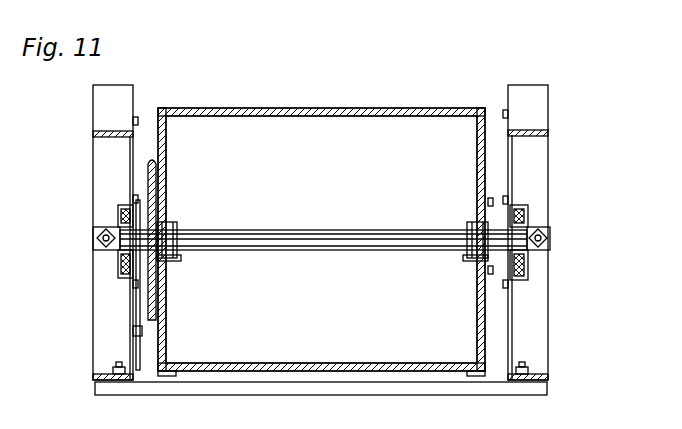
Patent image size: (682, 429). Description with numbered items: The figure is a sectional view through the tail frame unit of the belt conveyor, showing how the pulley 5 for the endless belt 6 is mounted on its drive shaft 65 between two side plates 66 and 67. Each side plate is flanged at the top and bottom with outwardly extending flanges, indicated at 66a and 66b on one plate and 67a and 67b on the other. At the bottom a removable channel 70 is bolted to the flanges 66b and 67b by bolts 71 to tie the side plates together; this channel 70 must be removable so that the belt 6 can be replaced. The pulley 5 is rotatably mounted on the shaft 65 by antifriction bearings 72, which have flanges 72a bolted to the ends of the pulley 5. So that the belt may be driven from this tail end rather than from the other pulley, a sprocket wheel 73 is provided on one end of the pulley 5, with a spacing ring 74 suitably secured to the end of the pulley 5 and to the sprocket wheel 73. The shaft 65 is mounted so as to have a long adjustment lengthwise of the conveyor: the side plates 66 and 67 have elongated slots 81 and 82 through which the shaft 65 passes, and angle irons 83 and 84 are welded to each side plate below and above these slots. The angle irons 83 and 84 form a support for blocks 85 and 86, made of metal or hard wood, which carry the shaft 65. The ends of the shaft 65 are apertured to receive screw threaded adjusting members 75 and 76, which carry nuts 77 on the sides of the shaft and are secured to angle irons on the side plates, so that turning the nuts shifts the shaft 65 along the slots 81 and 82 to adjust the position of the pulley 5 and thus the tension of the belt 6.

The pulley 5 is at (288, 118).
The endless belt 6 is at (330, 108).
The drive shaft 65 is at (350, 250).
The side plate 66 is at (512, 174).
The top flange 66a is at (528, 136).
The bottom flange 66b is at (548, 378).
The side plate 67 is at (130, 186).
The top flange 67a is at (93, 134).
The bottom flange 67b is at (108, 375).
The removable channel 70 is at (297, 390).
The bolt 71 is at (118, 366).
The antifriction bearing 72 is at (168, 222).
The bearing flange 72a is at (166, 259).
The sprocket wheel 73 is at (151, 160).
The spacing ring 74 is at (140, 288).
The screw threaded adjusting member 75 is at (550, 244).
The screw threaded adjusting member 76 is at (97, 236).
The nut 77 is at (102, 241).
The elongated slot 81 is at (484, 225).
The elongated slot 82 is at (146, 338).
The angle iron 83 is at (118, 272).
The angle iron 84 is at (125, 215).
The block 85 is at (118, 264).
The block 86 is at (120, 214).